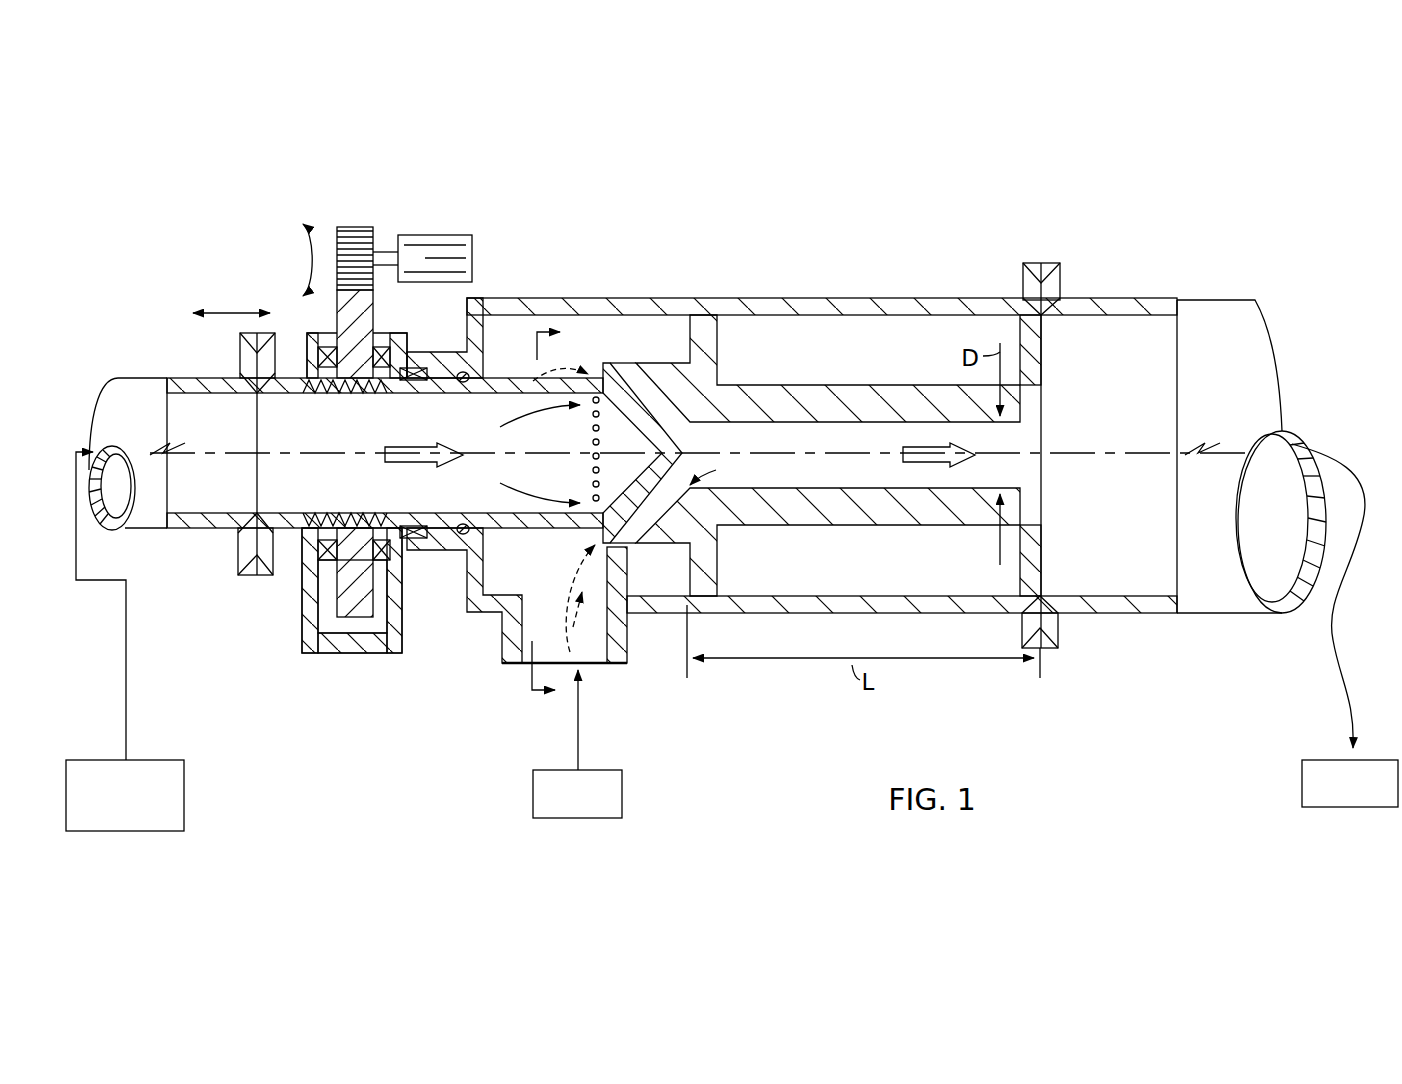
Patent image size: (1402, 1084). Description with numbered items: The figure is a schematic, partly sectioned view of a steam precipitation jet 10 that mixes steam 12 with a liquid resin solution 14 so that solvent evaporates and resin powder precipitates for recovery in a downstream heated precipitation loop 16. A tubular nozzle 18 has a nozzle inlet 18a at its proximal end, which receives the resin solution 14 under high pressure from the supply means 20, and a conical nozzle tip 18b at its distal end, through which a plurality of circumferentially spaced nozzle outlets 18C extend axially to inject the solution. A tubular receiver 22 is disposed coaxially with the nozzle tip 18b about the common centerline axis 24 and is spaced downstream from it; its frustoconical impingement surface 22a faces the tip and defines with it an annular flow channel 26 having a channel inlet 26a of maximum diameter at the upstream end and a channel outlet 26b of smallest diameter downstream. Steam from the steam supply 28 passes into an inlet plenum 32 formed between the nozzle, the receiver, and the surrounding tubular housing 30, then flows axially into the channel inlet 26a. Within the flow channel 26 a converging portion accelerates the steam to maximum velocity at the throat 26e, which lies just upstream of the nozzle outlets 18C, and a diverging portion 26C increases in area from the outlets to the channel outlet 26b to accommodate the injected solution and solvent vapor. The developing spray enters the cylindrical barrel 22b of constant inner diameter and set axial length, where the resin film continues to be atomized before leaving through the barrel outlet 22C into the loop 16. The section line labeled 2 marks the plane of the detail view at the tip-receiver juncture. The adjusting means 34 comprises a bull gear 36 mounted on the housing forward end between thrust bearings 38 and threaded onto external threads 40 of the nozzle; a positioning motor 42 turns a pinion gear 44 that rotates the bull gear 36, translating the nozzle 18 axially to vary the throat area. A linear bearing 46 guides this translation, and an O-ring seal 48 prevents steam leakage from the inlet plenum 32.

The precipitation jet 10 is at (966, 227).
The steam 12 is at (573, 633).
The liquid resin solution 14 is at (397, 445).
The precipitation piping loop 16 is at (1205, 300).
The nozzle 18 is at (490, 371).
The nozzle inlet 18a is at (215, 432).
The nozzle tip 18b is at (686, 446).
The nozzle outlets 18C is at (592, 441).
The means for supplying liquid resin solution 20 is at (186, 786).
The receiver 22 is at (679, 349).
The impingement surface 22a is at (652, 408).
The barrel 22b is at (900, 457).
The barrel outlet 22C is at (1042, 488).
The axial centerline axis 24 is at (1075, 456).
The flow channel 26 is at (720, 470).
The channel inlet 26a is at (602, 545).
The channel outlet 26b is at (690, 425).
The diverging portion 26C is at (722, 532).
The throat 26e is at (607, 375).
The means for supplying steam 28 is at (623, 785).
The housing 30 is at (838, 298).
The inlet plenum 32 is at (541, 354).
The adjusting means 34 is at (259, 259).
The bull gear 36 is at (343, 603).
The thrust bearings 38 is at (318, 585).
The external threads 40 is at (289, 372).
The positioning motor 42 is at (428, 236).
The pinion gear 44 is at (355, 228).
The linear bearing 46 is at (410, 540).
The seal 48 is at (470, 531).
The section line 2- 2 is at (558, 525).